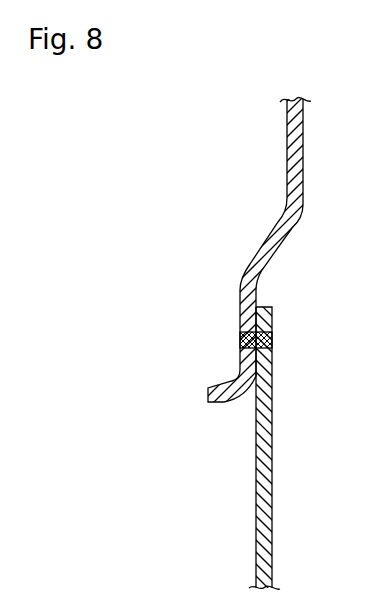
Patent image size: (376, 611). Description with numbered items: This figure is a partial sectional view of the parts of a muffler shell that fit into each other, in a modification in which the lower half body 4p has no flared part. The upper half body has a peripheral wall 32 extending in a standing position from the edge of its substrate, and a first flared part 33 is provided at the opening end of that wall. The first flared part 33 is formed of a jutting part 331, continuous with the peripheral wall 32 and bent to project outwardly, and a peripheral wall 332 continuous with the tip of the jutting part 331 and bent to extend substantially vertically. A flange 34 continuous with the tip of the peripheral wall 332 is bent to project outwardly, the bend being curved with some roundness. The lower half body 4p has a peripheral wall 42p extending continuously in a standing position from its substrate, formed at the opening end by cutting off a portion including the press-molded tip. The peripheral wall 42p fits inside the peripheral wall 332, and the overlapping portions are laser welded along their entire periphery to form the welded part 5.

The peripheral wall 32 is at (296, 163).
The first flared part 33 is at (241, 278).
The jutting part 331 is at (283, 247).
The peripheral wall 332 is at (240, 306).
The flange 34 is at (214, 403).
The welded part 5 is at (240, 342).
The peripheral wall 42p is at (271, 397).
The lower half body 4p is at (257, 484).